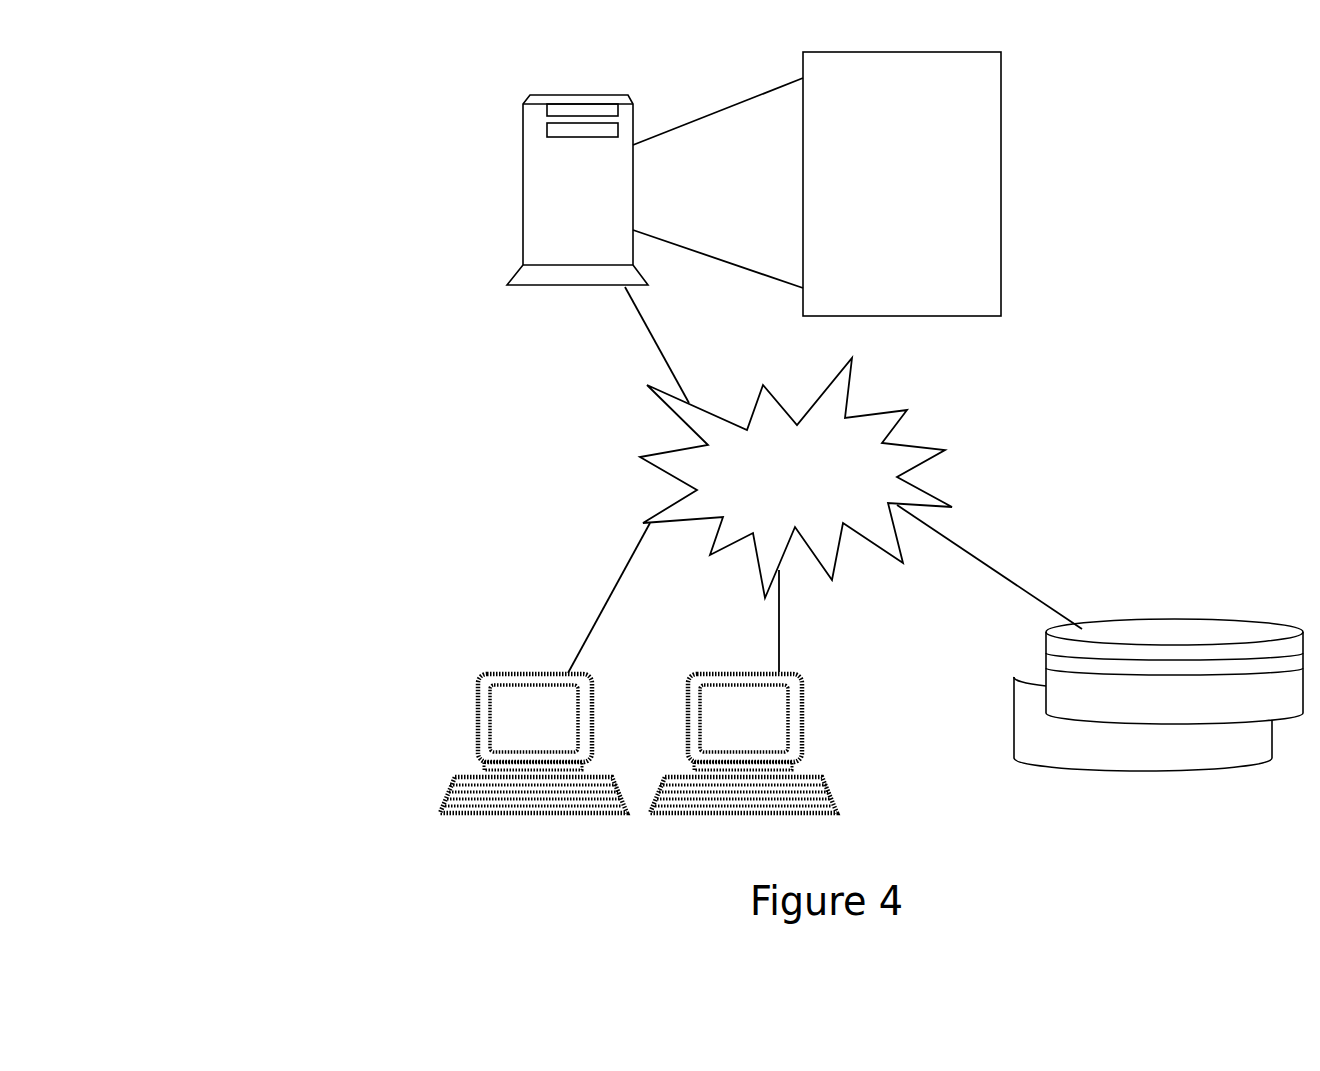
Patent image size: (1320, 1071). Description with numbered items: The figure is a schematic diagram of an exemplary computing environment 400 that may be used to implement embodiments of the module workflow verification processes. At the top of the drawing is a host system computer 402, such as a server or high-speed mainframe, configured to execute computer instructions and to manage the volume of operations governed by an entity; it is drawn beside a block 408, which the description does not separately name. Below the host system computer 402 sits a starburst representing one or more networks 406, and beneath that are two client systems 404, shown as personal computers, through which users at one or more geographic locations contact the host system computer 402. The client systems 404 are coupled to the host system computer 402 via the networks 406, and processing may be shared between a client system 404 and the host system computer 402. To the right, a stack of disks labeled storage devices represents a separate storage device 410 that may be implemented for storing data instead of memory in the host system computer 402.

The computing environment 400 is at (263, 78).
The host system computer 402 is at (528, 175).
The client systems 404 is at (493, 710).
The networks 406 is at (918, 455).
The server component box 408 is at (990, 128).
The storage device 410 is at (1235, 632).